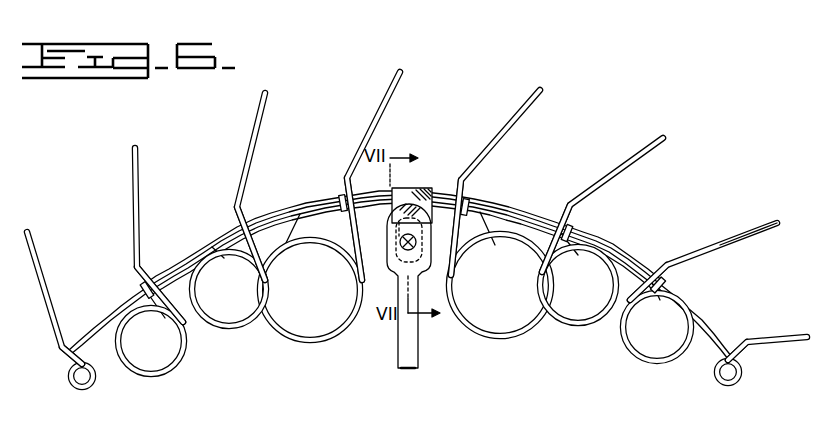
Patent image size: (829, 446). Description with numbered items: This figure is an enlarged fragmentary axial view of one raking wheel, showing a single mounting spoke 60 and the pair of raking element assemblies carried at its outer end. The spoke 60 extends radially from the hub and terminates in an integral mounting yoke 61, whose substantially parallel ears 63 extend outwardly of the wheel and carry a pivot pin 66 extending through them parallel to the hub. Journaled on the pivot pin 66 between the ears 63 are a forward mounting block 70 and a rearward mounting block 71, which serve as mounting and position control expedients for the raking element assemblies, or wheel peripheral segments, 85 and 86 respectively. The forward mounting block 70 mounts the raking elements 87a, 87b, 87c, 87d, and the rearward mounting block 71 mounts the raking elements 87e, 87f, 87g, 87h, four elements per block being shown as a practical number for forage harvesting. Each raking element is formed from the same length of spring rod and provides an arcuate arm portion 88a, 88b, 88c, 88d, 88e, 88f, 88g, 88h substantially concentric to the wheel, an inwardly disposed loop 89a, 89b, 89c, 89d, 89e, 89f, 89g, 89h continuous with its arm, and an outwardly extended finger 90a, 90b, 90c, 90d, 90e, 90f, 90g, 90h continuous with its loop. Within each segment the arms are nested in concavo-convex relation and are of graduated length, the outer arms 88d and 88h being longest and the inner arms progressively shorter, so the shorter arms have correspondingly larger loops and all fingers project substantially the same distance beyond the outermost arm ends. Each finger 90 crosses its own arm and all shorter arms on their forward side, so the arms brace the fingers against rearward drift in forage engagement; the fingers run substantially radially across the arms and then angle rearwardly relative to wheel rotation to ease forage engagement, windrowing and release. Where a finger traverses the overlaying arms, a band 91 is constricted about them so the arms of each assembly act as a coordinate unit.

The spoke 60 is at (418, 357).
The mounting yoke 61 is at (394, 262).
The ear 63 is at (396, 229).
The pivot pin 66 is at (418, 244).
The forward mounting block 70 is at (392, 194).
The rearward mounting block 71 is at (412, 196).
The raking element assembly 85 is at (263, 211).
The raking element assembly 86 is at (504, 209).
The raking element 87a is at (338, 245).
The raking element 87b is at (265, 243).
The raking element 87c is at (235, 238).
The raking element 87d is at (184, 262).
The raking element 87e is at (452, 198).
The raking element 87f is at (478, 205).
The raking element 87g is at (530, 222).
The raking element 87h is at (607, 248).
The arcuate arm portion 88a is at (337, 218).
The arcuate arm portion 88b is at (216, 258).
The arcuate arm portion 88c is at (140, 308).
The arcuate arm portion 88d is at (93, 340).
The arcuate arm portion 88e is at (476, 213).
The arcuate arm portion 88f is at (584, 250).
The arcuate arm portion 88g is at (665, 297).
The arcuate arm portion 88h is at (717, 308).
The loop 89a is at (325, 336).
The loop 89b is at (238, 328).
The loop 89c is at (166, 365).
The loop 89d is at (78, 388).
The loop 89e is at (488, 332).
The loop 89f is at (604, 320).
The loop 89g is at (642, 364).
The loop 89h is at (722, 386).
The finger 90 is at (727, 247).
The finger 90a is at (393, 96).
The finger 90b is at (262, 120).
The finger 90c is at (139, 165).
The finger 90d is at (40, 250).
The finger 90e is at (516, 123).
The finger 90f is at (665, 141).
The finger 90g is at (776, 221).
The finger 90h is at (800, 338).
The band 91 is at (341, 200).